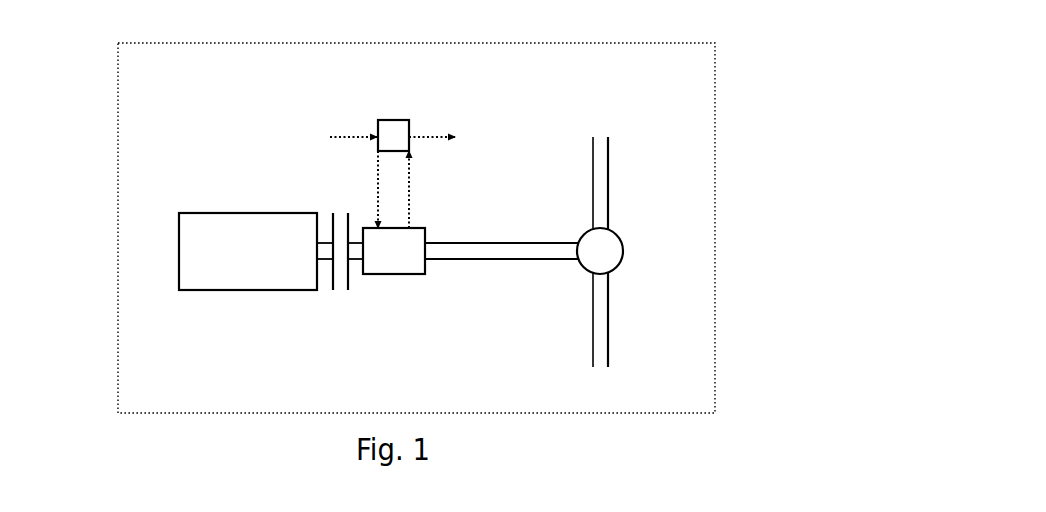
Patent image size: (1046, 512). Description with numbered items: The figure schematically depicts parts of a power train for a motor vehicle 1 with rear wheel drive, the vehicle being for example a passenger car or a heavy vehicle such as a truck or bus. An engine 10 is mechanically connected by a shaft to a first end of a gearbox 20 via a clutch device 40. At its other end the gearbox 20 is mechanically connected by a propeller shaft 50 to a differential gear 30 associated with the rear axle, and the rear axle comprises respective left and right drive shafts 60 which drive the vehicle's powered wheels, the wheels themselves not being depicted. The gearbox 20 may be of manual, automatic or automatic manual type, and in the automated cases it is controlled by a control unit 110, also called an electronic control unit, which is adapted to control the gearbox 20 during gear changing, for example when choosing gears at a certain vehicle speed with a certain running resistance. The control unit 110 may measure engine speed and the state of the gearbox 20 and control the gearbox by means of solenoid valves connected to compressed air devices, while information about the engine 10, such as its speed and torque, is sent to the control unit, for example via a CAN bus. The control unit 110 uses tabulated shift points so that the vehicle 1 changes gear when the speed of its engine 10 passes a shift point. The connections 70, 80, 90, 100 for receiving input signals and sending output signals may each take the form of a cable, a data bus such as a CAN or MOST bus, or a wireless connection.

The motor vehicle 1 is at (134, 105).
The engine 10 is at (226, 258).
The gearbox 20 is at (394, 258).
The differential gear 30 is at (607, 245).
The clutch device 40 is at (338, 277).
The propeller shaft 50 is at (468, 223).
The drive shafts 60 is at (610, 182).
The connection 70 is at (377, 183).
The connection 80 is at (409, 183).
The connection 90 is at (348, 130).
The connection 100 is at (425, 135).
The control unit 110 is at (393, 120).